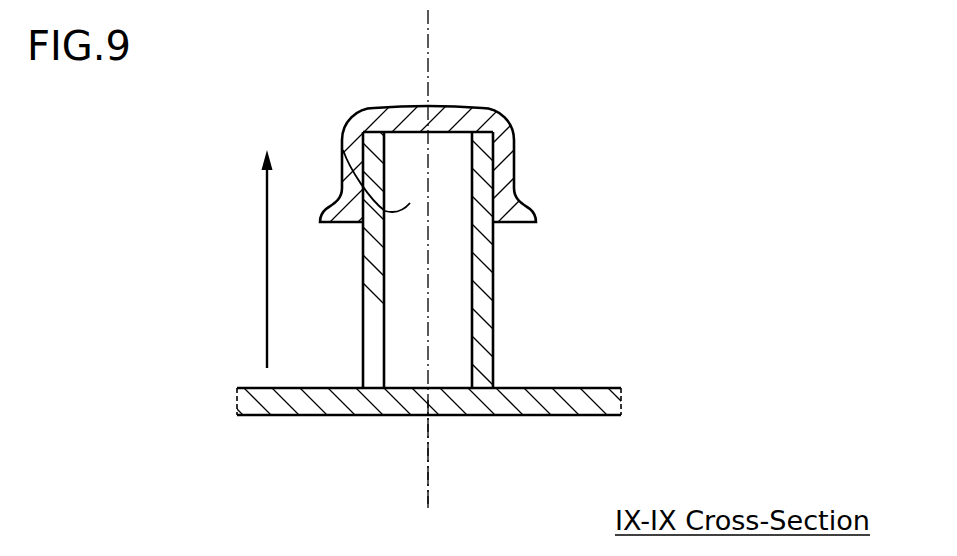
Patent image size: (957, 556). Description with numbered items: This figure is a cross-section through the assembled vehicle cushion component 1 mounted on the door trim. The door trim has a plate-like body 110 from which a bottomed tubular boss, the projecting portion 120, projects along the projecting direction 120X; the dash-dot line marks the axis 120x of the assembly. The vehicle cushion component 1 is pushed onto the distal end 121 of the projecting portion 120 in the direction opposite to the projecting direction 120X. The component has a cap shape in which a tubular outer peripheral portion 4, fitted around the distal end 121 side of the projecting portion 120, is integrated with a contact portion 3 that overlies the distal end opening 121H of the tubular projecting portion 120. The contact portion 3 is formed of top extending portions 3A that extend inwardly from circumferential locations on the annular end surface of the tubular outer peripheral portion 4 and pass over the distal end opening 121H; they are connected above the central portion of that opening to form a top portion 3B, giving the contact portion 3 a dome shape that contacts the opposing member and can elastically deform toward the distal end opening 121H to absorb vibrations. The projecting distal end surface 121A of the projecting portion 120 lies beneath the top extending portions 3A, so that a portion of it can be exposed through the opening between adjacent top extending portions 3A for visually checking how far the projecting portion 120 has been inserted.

The vehicle cushion component 1 is at (350, 272).
The contact portion 3 is at (347, 115).
The top extending portions 3A is at (388, 112).
The top portion 3B is at (418, 115).
The tubular outer peripheral portion 4 is at (511, 163).
The body 110 is at (559, 384).
The projecting portion 120 is at (490, 295).
The projecting direction 120X is at (265, 238).
The axis 120x is at (428, 472).
The distal end 121 is at (485, 147).
The projecting distal end surface 121A is at (373, 131).
The distal end opening 121H is at (410, 203).